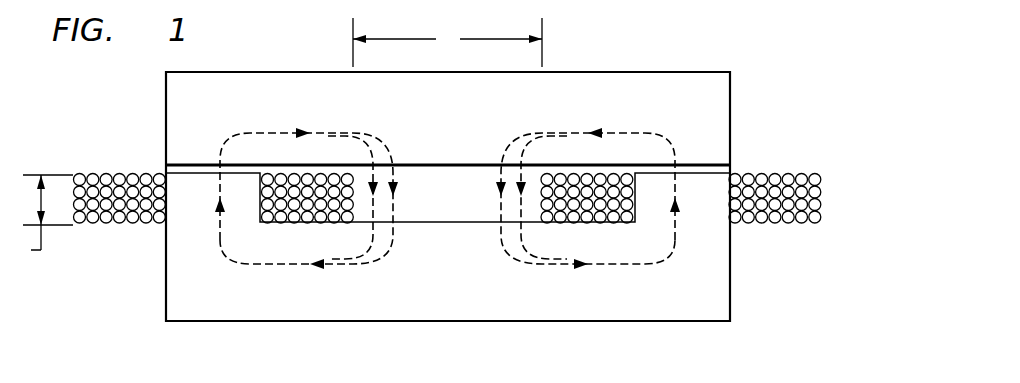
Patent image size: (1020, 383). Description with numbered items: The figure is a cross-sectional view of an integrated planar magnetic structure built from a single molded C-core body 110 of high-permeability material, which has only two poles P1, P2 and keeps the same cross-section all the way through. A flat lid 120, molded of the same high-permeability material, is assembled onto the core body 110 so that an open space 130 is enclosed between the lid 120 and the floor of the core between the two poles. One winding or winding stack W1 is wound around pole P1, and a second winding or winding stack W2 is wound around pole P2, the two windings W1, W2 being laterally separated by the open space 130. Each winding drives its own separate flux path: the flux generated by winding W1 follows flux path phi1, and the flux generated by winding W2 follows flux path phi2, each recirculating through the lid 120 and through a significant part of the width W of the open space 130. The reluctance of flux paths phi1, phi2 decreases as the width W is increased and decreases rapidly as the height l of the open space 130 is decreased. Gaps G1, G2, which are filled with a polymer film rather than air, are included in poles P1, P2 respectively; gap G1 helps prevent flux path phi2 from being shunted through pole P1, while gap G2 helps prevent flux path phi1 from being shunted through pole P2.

The C-core body 110 is at (730, 302).
The lid 120 is at (671, 72).
The open space 130 is at (466, 129).
The first winding W1 is at (118, 221).
The second winding W2 is at (777, 221).
The first air gap G1 is at (195, 157).
The second air gap G2 is at (699, 157).
The first pole P1 is at (178, 197).
The second pole P2 is at (717, 197).
The width of the open space W is at (447, 42).
The height of the open space l is at (43, 218).
The first flux path phi1 is at (306, 197).
The second flux path phi2 is at (588, 212).